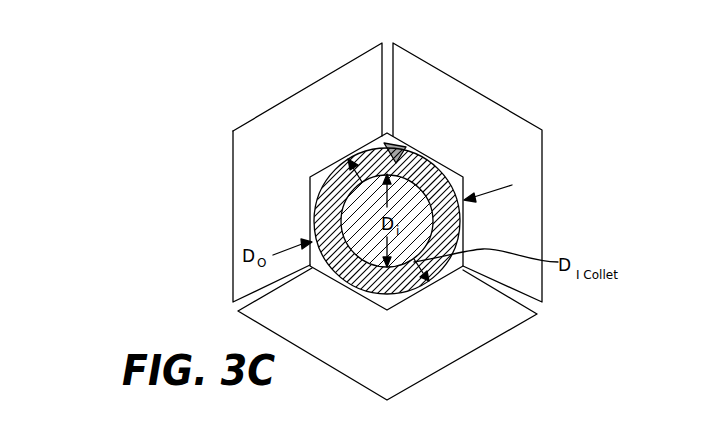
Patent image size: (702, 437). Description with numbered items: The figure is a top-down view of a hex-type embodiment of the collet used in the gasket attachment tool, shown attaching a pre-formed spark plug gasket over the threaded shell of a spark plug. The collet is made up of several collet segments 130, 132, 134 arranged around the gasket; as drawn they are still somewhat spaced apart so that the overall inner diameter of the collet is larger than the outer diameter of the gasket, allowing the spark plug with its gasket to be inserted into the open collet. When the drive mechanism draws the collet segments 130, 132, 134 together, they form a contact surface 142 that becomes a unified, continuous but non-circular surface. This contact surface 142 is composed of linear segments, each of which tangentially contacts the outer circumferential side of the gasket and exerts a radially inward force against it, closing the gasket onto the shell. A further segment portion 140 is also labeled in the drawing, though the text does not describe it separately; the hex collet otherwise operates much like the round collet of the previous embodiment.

The collet segment 130 is at (465, 108).
The collet segment 132 is at (447, 322).
The collet segment 134 is at (253, 218).
The wall edge 140 is at (283, 122).
The contact surface 142 is at (386, 144).